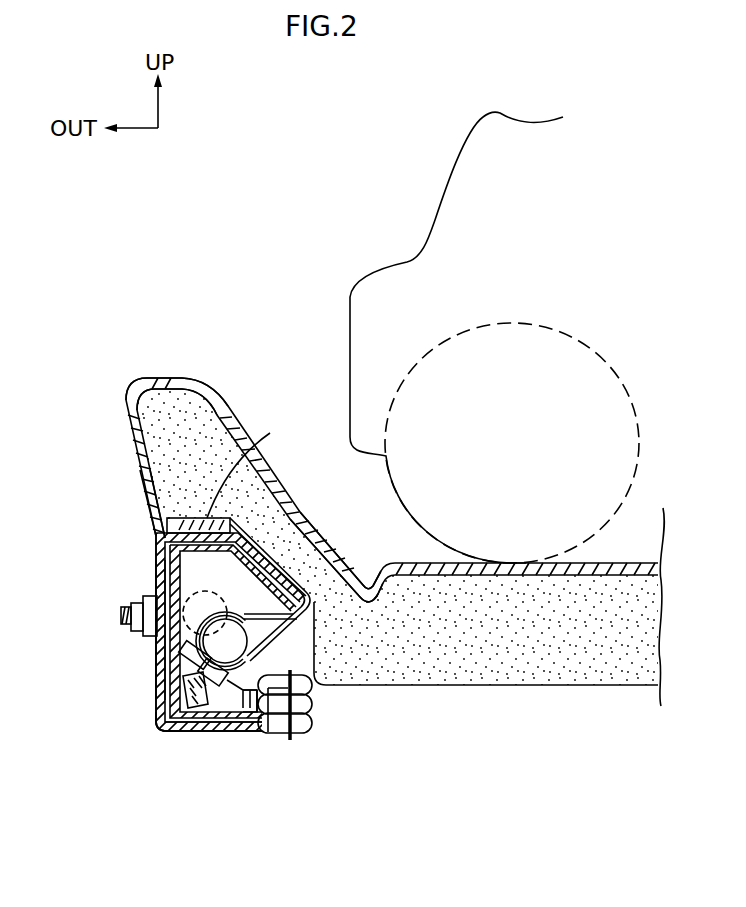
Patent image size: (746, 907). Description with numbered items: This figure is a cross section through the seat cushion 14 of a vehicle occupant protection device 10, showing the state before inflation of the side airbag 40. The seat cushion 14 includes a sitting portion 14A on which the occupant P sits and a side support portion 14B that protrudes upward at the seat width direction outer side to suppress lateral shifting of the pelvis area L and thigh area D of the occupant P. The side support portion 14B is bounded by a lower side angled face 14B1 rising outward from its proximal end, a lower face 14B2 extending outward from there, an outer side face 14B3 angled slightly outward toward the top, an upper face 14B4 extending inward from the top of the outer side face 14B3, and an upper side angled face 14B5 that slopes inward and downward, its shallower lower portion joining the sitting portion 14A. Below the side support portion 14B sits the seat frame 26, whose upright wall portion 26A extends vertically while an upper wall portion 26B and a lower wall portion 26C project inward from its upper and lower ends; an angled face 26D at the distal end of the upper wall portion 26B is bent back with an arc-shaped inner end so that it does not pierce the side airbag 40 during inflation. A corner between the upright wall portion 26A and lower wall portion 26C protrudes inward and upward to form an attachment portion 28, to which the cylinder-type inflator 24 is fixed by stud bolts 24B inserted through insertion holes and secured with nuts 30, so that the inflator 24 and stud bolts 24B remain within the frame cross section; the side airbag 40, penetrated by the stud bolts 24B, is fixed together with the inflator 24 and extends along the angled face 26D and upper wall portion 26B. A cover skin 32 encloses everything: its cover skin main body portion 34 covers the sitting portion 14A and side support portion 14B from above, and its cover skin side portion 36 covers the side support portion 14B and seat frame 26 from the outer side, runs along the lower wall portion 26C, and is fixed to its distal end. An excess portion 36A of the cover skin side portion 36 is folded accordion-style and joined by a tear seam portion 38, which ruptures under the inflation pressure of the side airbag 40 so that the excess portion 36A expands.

The vehicle occupant protection device 10 is at (173, 805).
The seat cushion 14 is at (505, 721).
The sitting portion 14A is at (462, 578).
The side support portion 14B is at (167, 378).
The lower side angled face 14B1 is at (308, 552).
The lower face 14B2 is at (245, 470).
The outer side face 14B3 is at (140, 452).
The upper face 14B4 is at (205, 378).
The upper side angled face 14B5 is at (268, 440).
The inflator 24 is at (262, 636).
The stud bolt 24B is at (163, 734).
The seat frame 26 is at (156, 557).
The upright wall portion 26A is at (156, 665).
The upper wall portion 26B is at (167, 525).
The lower wall portion 26C is at (246, 734).
The angled face 26D is at (296, 546).
The attachment portion 28 is at (237, 698).
The nut 30 is at (188, 683).
The cover skin 32 is at (135, 374).
The cover skin main body portion 34 is at (243, 390).
The cover skin side portion 36 is at (140, 482).
The excess portion 36A is at (313, 712).
The tear seam portion 38 is at (292, 744).
The side airbag 40 is at (243, 611).
The occupant P is at (452, 156).
The pelvis area L is at (423, 284).
The thigh area D is at (560, 328).